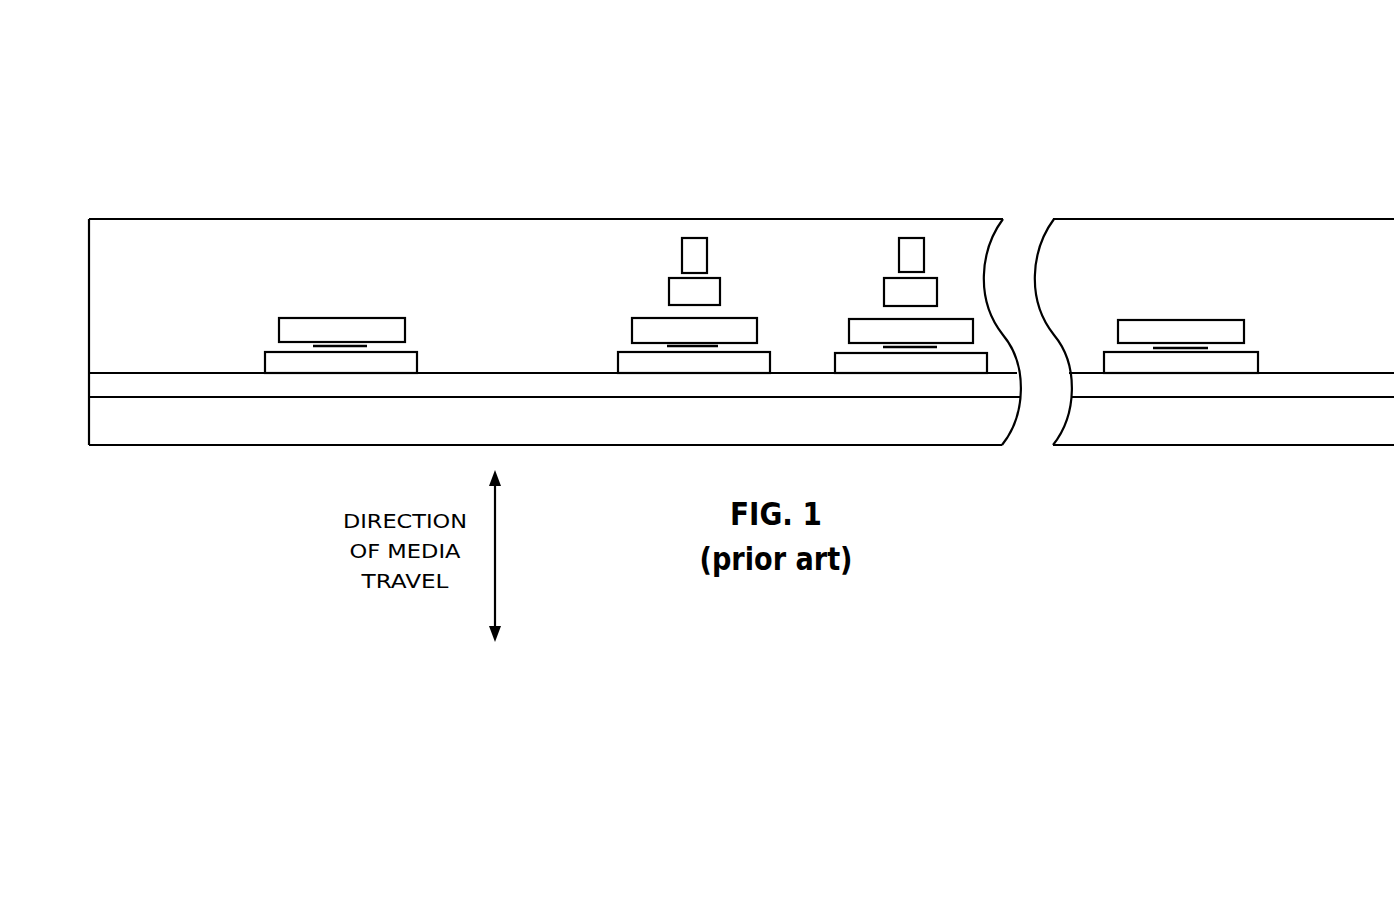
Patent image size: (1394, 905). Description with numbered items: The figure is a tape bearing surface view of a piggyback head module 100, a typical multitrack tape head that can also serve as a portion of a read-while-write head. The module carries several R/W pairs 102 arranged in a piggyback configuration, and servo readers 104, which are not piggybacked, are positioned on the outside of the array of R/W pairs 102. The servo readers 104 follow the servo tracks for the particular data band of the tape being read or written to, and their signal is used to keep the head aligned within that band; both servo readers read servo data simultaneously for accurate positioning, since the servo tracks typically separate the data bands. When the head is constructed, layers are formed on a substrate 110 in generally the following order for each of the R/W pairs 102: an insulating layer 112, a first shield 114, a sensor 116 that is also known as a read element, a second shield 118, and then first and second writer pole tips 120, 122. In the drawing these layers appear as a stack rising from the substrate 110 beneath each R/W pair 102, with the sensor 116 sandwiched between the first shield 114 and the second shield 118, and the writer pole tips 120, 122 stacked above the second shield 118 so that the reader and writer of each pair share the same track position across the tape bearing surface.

The piggyback head module 100 is at (135, 177).
The R/W pairs 102 is at (752, 226).
The servo readers 104 is at (395, 255).
The substrate 110 is at (288, 436).
The insulating layer 112 is at (1298, 376).
The first shield 114 is at (618, 362).
The sensor 116 is at (715, 348).
The second shield 118 is at (632, 333).
The first writer pole tip 120 is at (669, 295).
The second writer pole tip 122 is at (707, 262).